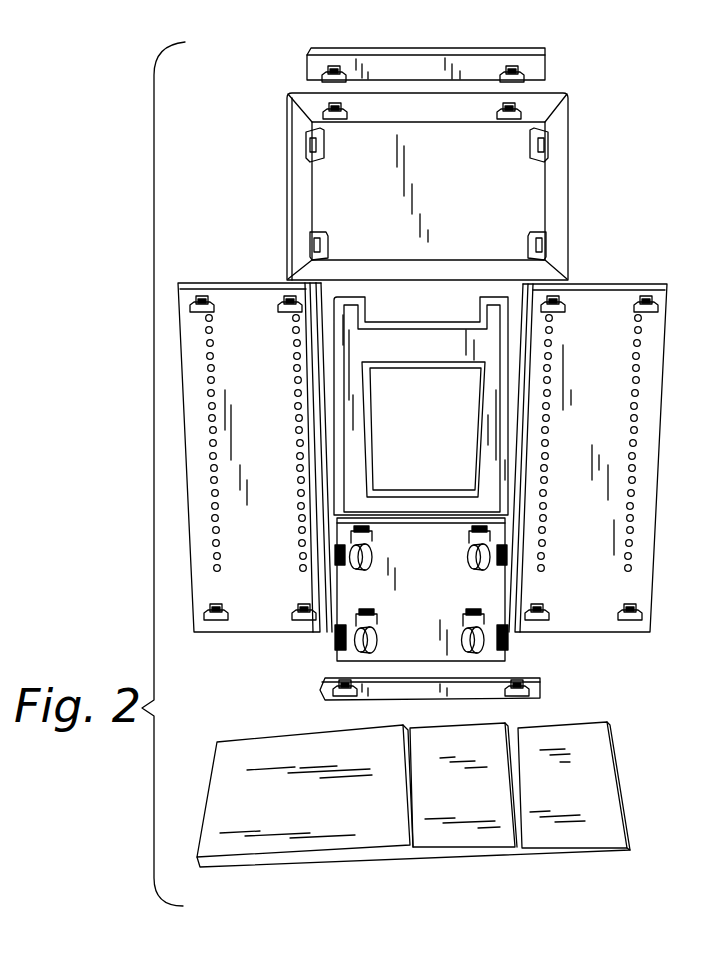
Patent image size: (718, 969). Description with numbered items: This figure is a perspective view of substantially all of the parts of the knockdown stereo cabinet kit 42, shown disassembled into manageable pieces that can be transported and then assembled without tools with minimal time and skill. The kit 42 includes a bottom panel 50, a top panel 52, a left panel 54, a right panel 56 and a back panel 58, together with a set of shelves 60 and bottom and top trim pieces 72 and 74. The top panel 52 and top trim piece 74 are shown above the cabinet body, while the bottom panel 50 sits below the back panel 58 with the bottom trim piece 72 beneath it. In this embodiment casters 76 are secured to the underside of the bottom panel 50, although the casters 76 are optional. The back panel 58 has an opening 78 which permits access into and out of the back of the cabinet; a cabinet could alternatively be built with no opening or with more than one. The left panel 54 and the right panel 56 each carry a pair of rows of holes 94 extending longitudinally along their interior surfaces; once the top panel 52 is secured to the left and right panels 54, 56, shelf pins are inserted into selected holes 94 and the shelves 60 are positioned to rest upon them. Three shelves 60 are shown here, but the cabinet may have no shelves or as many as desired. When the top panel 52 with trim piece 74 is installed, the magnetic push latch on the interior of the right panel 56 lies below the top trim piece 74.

The kit 42 is at (604, 222).
The bottom panel 50 is at (428, 638).
The top panel 52 is at (386, 197).
The left panel 54 is at (268, 372).
The right panel 56 is at (602, 382).
The back panel 58 is at (450, 332).
The shelves 60 is at (283, 835).
The bottom trim piece 72 is at (320, 688).
The top trim piece 74 is at (418, 24).
The casters 76 is at (373, 560).
The opening 78 is at (408, 378).
The holes 94 is at (292, 440).